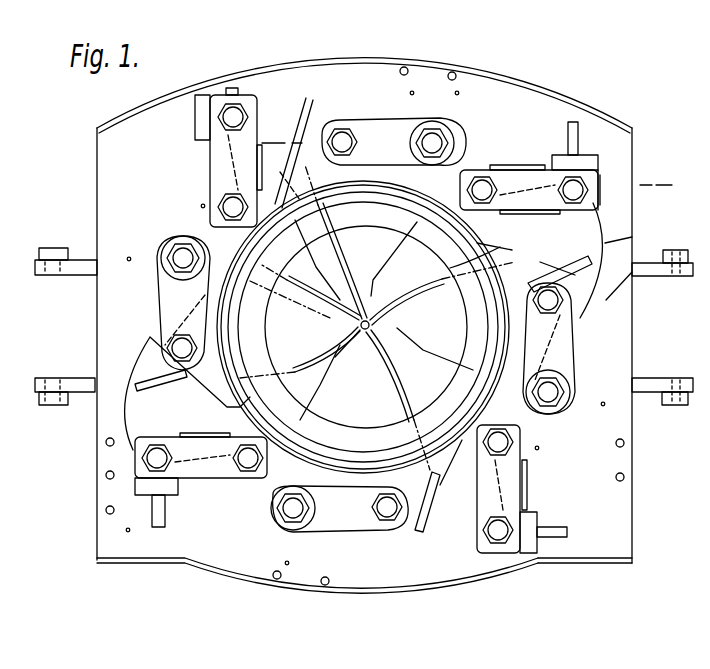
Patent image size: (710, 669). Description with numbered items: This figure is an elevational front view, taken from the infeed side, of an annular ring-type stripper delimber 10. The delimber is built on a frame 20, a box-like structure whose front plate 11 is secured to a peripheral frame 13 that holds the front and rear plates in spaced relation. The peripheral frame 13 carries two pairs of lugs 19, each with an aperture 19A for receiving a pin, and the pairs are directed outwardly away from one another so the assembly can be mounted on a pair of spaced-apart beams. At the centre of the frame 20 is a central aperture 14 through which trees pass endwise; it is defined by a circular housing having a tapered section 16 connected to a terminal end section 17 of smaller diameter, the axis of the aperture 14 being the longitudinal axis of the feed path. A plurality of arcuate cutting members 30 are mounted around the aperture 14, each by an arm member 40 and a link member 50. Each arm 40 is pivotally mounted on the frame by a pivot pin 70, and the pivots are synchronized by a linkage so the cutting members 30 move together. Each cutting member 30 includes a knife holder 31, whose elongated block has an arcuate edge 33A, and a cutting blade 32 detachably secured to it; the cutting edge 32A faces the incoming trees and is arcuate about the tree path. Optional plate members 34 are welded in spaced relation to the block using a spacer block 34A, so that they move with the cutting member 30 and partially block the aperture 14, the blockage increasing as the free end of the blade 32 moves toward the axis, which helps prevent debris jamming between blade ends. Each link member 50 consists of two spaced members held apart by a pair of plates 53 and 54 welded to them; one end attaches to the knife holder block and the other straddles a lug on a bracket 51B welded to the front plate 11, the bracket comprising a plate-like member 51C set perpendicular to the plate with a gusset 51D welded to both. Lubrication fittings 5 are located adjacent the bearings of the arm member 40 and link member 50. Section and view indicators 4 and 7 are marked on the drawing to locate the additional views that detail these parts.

The section line 4- 4 is at (281, 142).
The lubrication fittings 5 is at (576, 314).
The view arrow 7 is at (298, 147).
The annular ring-type stripper delimber 10 is at (506, 596).
The front plate 11 is at (618, 508).
The peripheral frame 13 is at (586, 565).
The central aperture 14 is at (376, 246).
The tapered section 16 is at (353, 366).
The terminal end section 17 is at (300, 366).
The lugs 19 is at (43, 276).
The aperture 19A is at (60, 248).
The frame 20 is at (603, 549).
The arcuate cutting members 30 is at (285, 220).
The knife holder 31 is at (522, 280).
The cutting blade 32 is at (484, 250).
The cutting edge 32A is at (500, 262).
The arcuate edge 33A is at (540, 266).
The plate members 34 is at (633, 237).
The spacer block 34A is at (633, 300).
The arm member 40 is at (160, 293).
The link member 50 is at (215, 160).
The bracket 51B is at (590, 153).
The plate-like member 51C is at (600, 157).
The gusset 51D is at (566, 136).
The plate 53 is at (536, 490).
The plate 54 is at (479, 462).
The pivot pin 70 is at (272, 512).